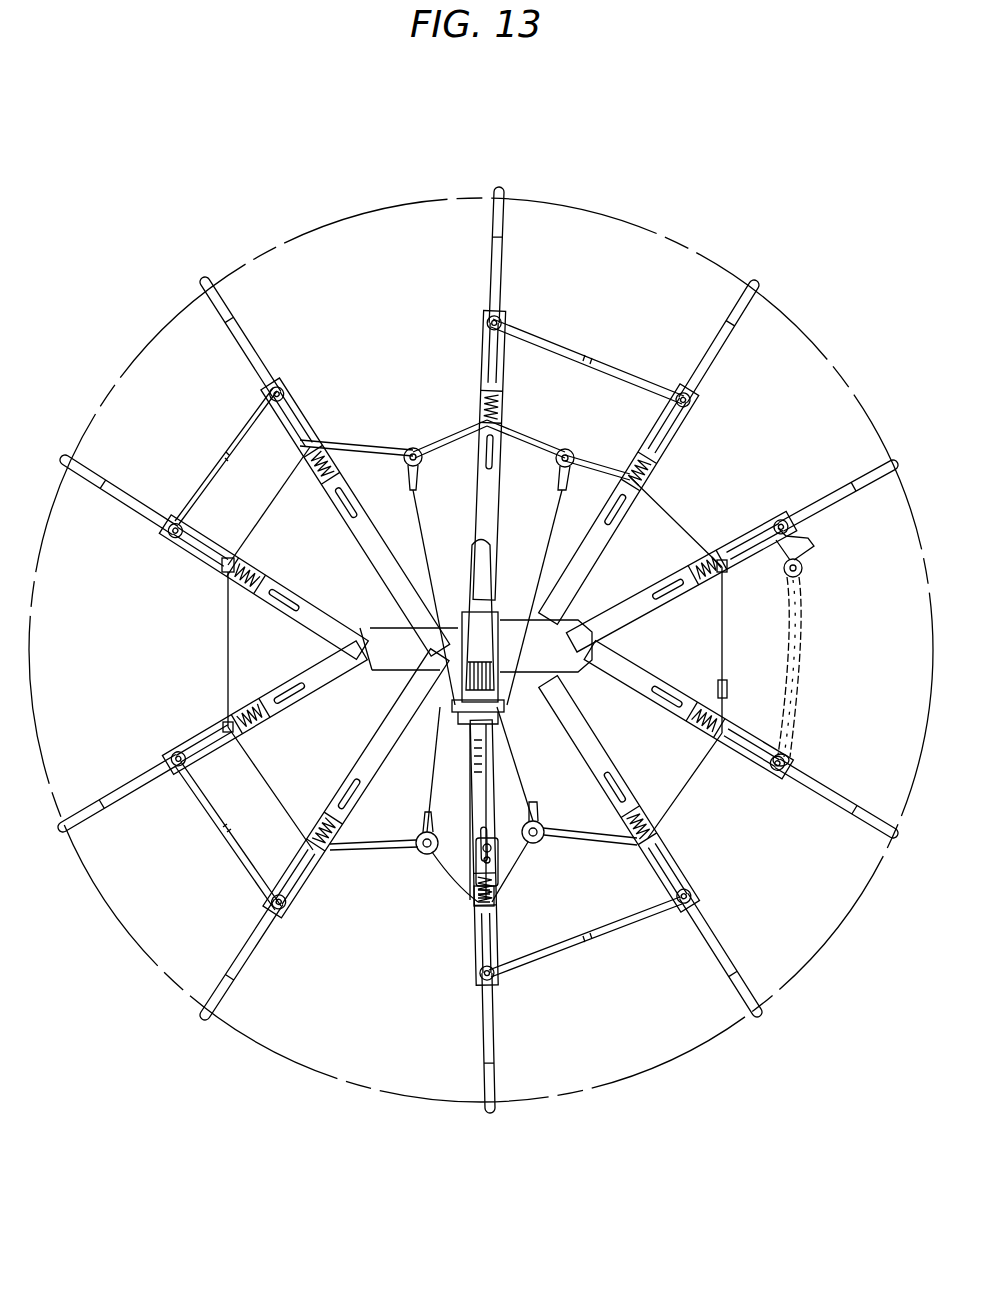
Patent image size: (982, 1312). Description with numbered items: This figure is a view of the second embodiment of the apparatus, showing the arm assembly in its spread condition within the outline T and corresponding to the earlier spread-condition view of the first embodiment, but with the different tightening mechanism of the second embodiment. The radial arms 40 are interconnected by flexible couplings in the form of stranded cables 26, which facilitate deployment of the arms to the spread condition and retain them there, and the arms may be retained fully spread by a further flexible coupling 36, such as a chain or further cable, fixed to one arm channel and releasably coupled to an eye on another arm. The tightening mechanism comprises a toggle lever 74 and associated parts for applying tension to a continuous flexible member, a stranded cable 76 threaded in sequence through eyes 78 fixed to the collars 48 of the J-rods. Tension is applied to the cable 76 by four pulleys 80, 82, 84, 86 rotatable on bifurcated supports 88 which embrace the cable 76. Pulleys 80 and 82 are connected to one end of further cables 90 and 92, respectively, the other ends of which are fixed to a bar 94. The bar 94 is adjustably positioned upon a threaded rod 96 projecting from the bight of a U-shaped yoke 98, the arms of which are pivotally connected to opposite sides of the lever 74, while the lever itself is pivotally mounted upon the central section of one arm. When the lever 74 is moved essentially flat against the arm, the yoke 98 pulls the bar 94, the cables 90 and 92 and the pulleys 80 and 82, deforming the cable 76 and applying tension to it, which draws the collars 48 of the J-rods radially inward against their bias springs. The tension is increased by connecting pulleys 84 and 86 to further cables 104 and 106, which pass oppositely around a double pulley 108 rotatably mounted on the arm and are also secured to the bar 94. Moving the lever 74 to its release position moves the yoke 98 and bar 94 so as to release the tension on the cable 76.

The tire outline T is at (840, 380).
The radial arm 40 is at (483, 238).
The stranded cable 26 is at (587, 357).
The further flexible coupling 36 is at (797, 652).
The collar 48 is at (494, 900).
The toggle lever 74 is at (476, 597).
The stranded cable 76 is at (224, 640).
The eye 78 is at (224, 568).
The pulley 80 is at (425, 855).
The pulley 82 is at (546, 838).
The pulley 84 is at (413, 447).
The pulley 86 is at (567, 449).
The bifurcated support 88 is at (418, 832).
The further cable 90 is at (433, 782).
The further cable 92 is at (523, 788).
The bar 94 is at (458, 720).
The threaded rod 96 is at (455, 706).
The U-shaped yoke 98 is at (458, 622).
The further cable 104 is at (422, 500).
The further cable 106 is at (553, 520).
The double pulley 108 is at (494, 852).